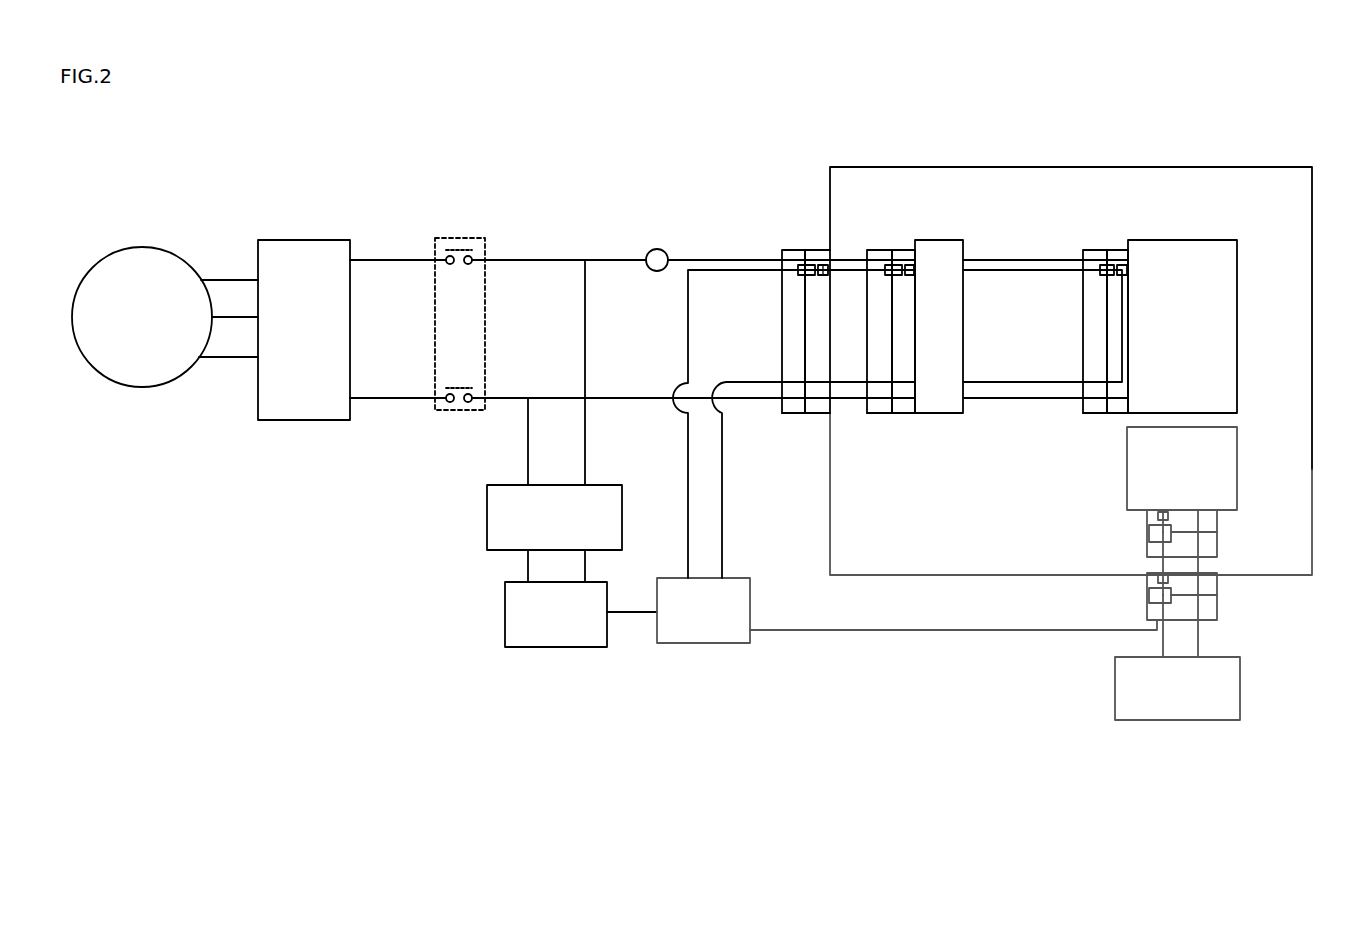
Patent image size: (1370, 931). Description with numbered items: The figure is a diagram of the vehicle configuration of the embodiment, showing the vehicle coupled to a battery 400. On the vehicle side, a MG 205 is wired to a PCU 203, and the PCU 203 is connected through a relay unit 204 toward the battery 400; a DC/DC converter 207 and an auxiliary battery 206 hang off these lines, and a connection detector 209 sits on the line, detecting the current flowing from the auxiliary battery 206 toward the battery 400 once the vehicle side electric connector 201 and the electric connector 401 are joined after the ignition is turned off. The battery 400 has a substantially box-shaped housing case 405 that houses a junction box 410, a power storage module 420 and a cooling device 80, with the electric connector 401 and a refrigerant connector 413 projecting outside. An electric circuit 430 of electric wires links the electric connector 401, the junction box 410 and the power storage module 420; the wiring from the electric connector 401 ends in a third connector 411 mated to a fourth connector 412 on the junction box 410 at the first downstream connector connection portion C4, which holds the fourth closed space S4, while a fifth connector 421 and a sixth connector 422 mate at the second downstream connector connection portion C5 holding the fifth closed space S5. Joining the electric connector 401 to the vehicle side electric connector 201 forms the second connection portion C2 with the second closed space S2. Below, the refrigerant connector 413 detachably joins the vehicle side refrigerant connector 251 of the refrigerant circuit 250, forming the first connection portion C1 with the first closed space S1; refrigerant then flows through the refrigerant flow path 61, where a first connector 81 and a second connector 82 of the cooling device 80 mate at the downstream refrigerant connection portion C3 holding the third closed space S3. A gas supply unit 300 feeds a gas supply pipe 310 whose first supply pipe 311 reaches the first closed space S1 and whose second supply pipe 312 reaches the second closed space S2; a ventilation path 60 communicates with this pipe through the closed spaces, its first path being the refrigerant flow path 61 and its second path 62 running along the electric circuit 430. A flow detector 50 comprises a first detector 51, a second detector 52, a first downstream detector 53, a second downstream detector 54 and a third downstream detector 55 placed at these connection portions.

The vehicle side electric connector 201 is at (795, 250).
The PCU 203 is at (320, 240).
The system main relay 204 is at (463, 237).
The MG 205 is at (160, 249).
The auxiliary battery 206 is at (592, 582).
The DC/DC converter 207 is at (605, 485).
The connection detector 209 is at (655, 249).
The refrigerant circuit 250 is at (1172, 721).
The vehicle side refrigerant connector 251 is at (1217, 607).
The gas supply unit 300 is at (695, 644).
The gas supply pipe 310 is at (889, 487).
The first supply pipe 311 is at (920, 632).
The second supply pipe 312 is at (686, 316).
The battery 400 is at (1051, 414).
The electric connector 401 is at (823, 250).
The housing case 405 is at (1237, 167).
The junction box 410 is at (943, 240).
The third connector 411 is at (877, 250).
The fourth connector 412 is at (901, 250).
The refrigerant connector 413 is at (1217, 583).
The power storage module 420 is at (1180, 240).
The fifth connector 421 is at (1097, 250).
The sixth connector 422 is at (1115, 250).
The electric circuit 430 is at (987, 257).
The flow detector 50 is at (964, 344).
The first detector 51 is at (1157, 577).
The second detector 52 is at (827, 250).
The first downstream detector 53 is at (1157, 513).
The second downstream detector 54 is at (912, 257).
The third downstream detector 55 is at (1127, 252).
The ventilation path 60 is at (1100, 318).
The refrigerant flow path 61 is at (1165, 562).
The second path 62 is at (845, 267).
The cooling device 80 is at (1238, 459).
The first connector 81 is at (1217, 552).
The second connector 82 is at (1217, 523).
The first connection portion C1 is at (1252, 613).
The second connection portion C2 is at (797, 439).
The downstream refrigerant connection portion C3 is at (1232, 540).
The first downstream connector connection portion C4 is at (890, 439).
The second downstream connector connection portion C5 is at (1090, 434).
The first closed space S1 is at (1147, 592).
The second closed space S2 is at (800, 276).
The third closed space S3 is at (1147, 533).
The fourth closed space S4 is at (887, 276).
The fifth closed space S5 is at (1100, 276).